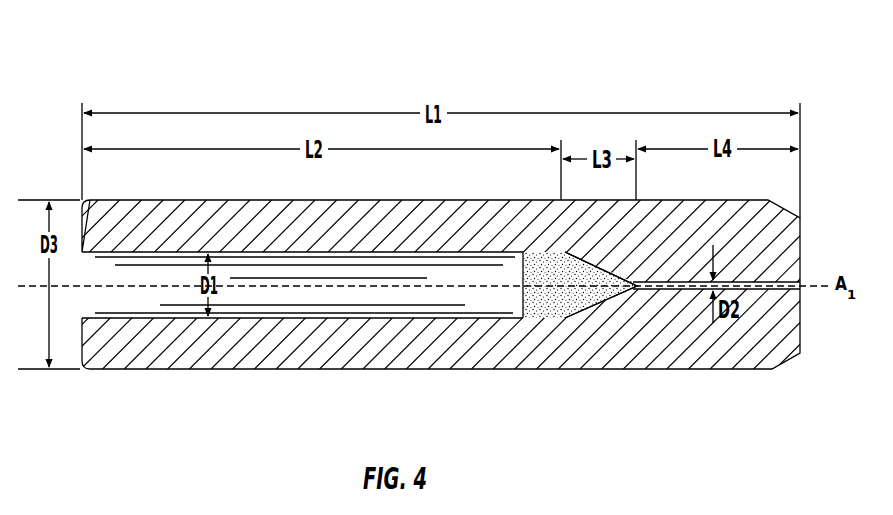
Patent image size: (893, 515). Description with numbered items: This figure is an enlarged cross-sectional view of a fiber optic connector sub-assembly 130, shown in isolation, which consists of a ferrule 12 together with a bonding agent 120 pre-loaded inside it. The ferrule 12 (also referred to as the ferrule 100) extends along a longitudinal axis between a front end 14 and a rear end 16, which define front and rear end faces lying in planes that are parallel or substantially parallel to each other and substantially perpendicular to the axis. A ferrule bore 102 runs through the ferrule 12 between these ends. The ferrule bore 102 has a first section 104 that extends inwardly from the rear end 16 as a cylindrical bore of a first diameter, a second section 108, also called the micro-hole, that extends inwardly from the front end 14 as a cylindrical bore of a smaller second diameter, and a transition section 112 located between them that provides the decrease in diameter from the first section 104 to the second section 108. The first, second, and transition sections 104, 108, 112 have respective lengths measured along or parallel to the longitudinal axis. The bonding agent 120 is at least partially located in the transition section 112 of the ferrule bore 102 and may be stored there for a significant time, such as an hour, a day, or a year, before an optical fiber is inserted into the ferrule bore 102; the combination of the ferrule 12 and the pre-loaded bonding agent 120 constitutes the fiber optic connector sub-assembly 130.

The fiber optic connector sub-assembly 130 is at (173, 86).
The ferrule 12 is at (237, 373).
The front end 14 is at (800, 243).
The rear end 16 is at (80, 233).
The ferrule 100 is at (153, 198).
The ferrule bore 102 is at (78, 306).
The first section 104 is at (157, 320).
The second section 108 is at (760, 290).
The transition section 112 is at (600, 296).
The bonding agent 120 is at (550, 300).